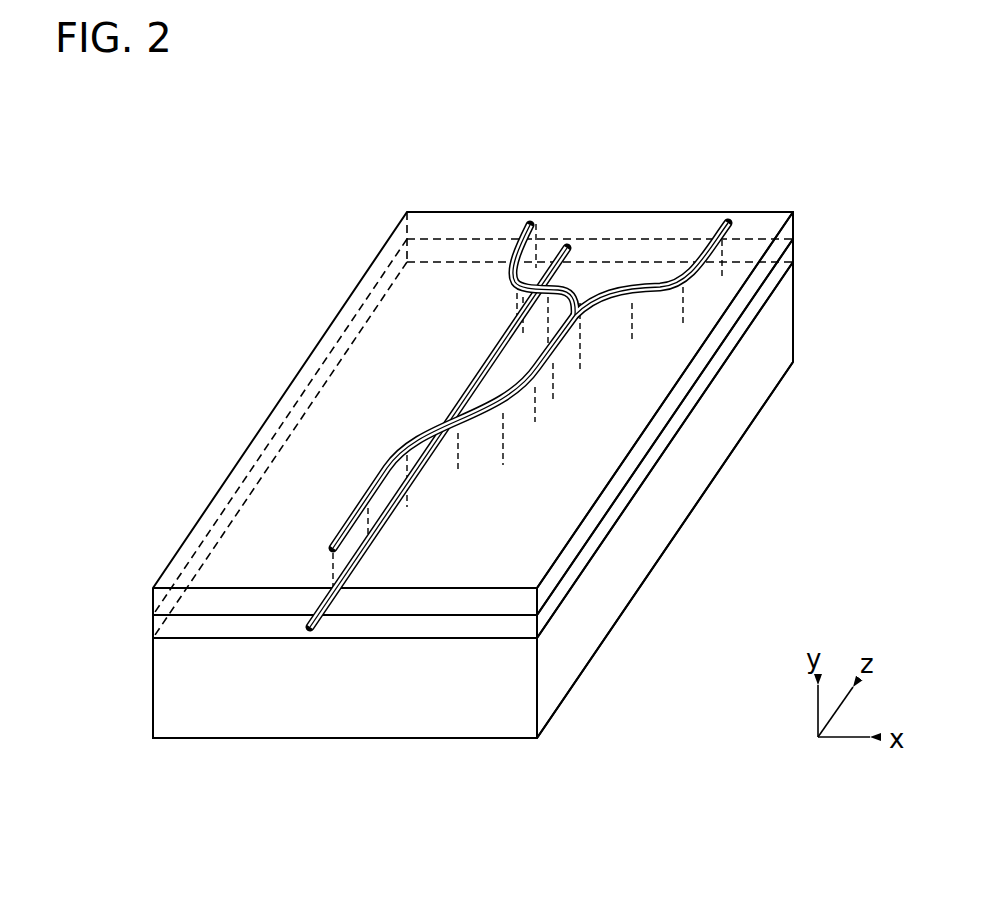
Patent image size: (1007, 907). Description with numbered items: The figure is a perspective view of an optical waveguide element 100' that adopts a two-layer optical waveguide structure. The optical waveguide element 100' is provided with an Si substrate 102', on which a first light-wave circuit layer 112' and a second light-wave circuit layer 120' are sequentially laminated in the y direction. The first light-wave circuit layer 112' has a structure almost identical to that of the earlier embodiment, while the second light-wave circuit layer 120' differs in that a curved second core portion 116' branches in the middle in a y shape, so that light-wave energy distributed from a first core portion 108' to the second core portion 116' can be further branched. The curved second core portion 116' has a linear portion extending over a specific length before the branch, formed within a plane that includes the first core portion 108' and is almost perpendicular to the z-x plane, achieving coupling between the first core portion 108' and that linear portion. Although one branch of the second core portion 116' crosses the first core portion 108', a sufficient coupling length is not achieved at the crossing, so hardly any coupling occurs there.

The optical waveguide element 100' is at (502, 536).
The Si substrate 102' is at (475, 500).
The first core portion 108' is at (413, 431).
The first light-wave circuit layer 112' is at (490, 438).
The curved second core portion 116' is at (460, 385).
The second light-wave circuit layer 120' is at (502, 413).